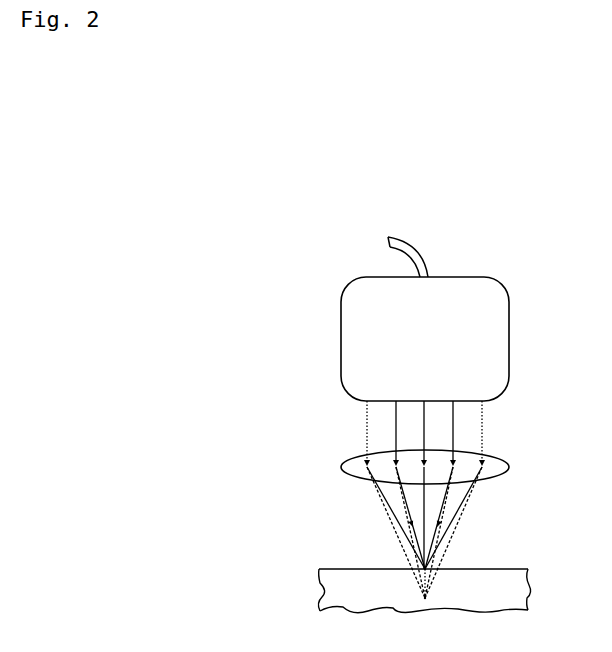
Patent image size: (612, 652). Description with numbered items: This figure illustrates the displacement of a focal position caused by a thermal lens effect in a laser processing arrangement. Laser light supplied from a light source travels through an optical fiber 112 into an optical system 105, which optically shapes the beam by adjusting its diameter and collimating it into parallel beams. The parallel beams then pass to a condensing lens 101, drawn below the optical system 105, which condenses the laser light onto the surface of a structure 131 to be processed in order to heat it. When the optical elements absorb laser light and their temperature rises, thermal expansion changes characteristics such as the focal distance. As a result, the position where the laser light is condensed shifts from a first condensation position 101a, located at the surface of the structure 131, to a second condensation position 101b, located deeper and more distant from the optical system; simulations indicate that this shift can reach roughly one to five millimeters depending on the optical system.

The optical system 105 is at (509, 333).
The optical fiber 112 is at (422, 243).
The condensing lens 101 is at (509, 467).
The condensation position 101a is at (420, 568).
The condensation position 101b is at (420, 603).
The structure to be processed 131 is at (528, 592).